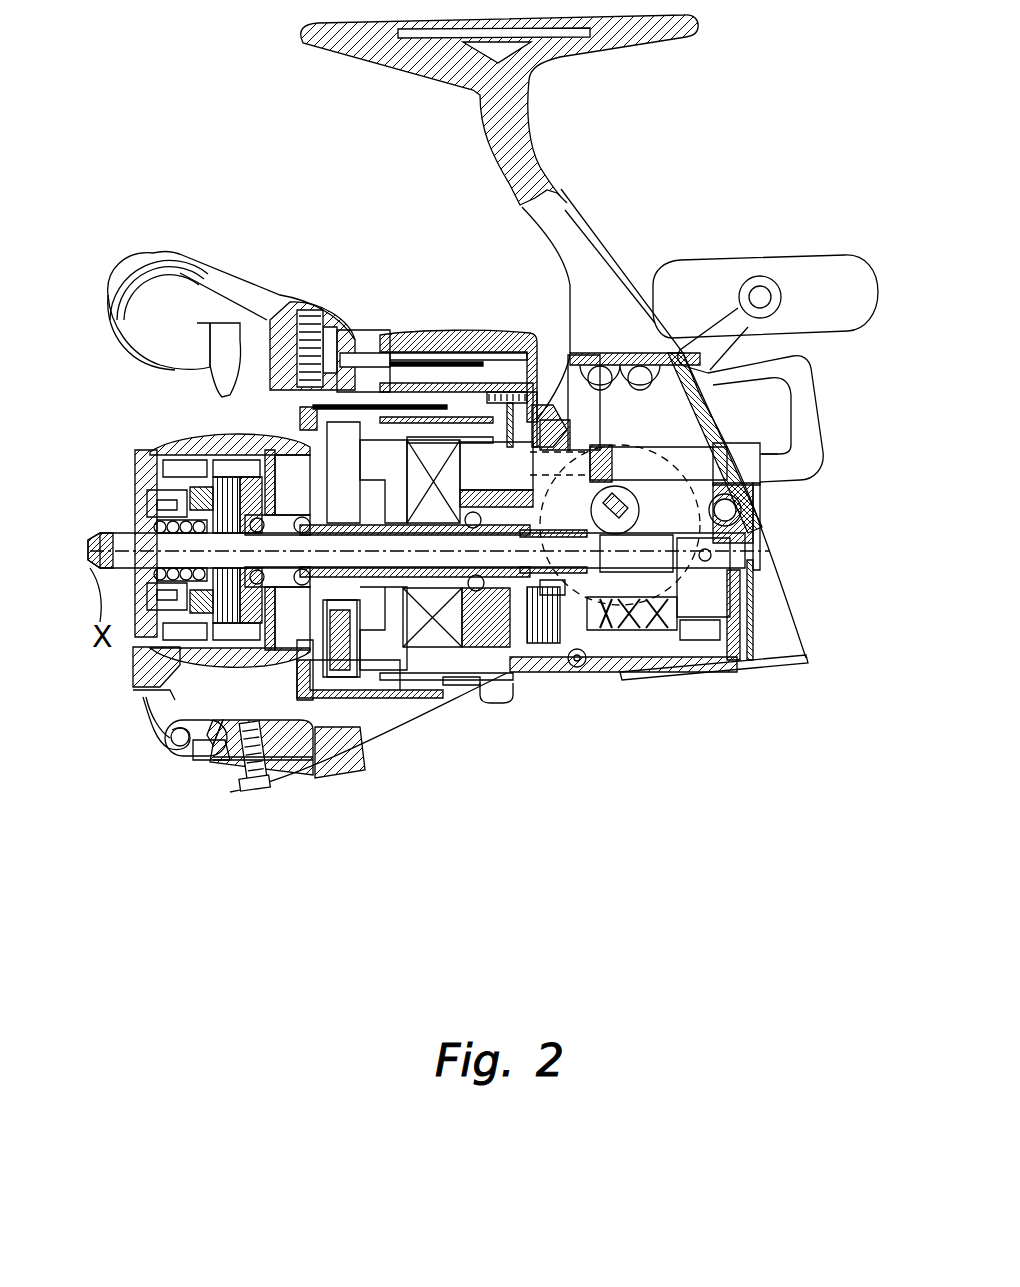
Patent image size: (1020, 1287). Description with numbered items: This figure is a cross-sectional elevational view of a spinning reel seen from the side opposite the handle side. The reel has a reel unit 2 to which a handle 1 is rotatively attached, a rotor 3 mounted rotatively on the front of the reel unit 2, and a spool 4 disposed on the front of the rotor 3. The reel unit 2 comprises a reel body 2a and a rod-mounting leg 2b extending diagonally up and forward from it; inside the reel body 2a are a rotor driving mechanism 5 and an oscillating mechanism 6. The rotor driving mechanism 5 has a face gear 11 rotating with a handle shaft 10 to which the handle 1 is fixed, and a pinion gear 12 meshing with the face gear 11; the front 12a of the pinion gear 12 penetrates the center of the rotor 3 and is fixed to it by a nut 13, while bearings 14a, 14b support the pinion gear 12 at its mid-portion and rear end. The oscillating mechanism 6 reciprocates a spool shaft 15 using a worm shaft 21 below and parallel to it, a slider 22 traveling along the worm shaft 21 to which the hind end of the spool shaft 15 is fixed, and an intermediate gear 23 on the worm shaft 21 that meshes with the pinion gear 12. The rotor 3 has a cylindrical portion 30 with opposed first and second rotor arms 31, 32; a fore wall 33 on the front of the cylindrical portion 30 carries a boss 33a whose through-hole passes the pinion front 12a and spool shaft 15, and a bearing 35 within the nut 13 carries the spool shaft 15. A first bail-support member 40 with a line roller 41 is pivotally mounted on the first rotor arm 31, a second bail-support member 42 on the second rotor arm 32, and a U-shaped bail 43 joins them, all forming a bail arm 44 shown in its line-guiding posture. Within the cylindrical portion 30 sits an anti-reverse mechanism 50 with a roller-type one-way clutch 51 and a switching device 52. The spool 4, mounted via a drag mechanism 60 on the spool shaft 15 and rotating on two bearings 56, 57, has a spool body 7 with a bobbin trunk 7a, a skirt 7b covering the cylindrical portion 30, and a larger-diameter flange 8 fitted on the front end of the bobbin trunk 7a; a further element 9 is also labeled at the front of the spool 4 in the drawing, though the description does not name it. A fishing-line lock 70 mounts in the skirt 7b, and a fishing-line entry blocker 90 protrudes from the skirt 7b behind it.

The handle 1 is at (730, 318).
The reel unit 2 is at (797, 552).
The reel body 2a is at (790, 500).
The rod-mounting leg 2b is at (579, 222).
The rotor 3 is at (408, 712).
The spool 4 is at (267, 677).
The rotor driving mechanism 5 is at (650, 486).
The oscillating mechanism 6 is at (637, 650).
The spool body 7 is at (287, 682).
The bobbin trunk 7a is at (223, 650).
The skirt 7b is at (300, 705).
The larger-diameter flange 8 is at (160, 692).
The bail reversing mechanism 9 is at (140, 675).
The handle shaft 10 is at (590, 350).
The face gear 11 is at (663, 655).
The pinion gear 12 is at (513, 673).
The front of the pinion gear 12a is at (397, 630).
The nut 13 is at (326, 523).
The bearing 14a is at (471, 515).
The bearing 14b is at (590, 680).
The spool shaft 15 is at (705, 650).
The worm shaft 21 is at (660, 700).
The slider 22 is at (760, 650).
The intermediate gear 23 is at (548, 645).
The cylindrical portion 30 is at (426, 702).
The first rotor arm 31 is at (322, 315).
The second rotor arm 32 is at (322, 790).
The fore wall 33 is at (300, 418).
The boss 33a is at (378, 506).
The bearing 35 is at (323, 614).
The first bail-support member 40 is at (243, 290).
The line roller 41 is at (113, 277).
The second bail-support member 42 is at (190, 757).
The bail 43 is at (228, 386).
The bail arm 44 is at (152, 376).
The anti-reverse mechanism 50 is at (448, 437).
The roller-type one-way clutch 51 is at (500, 395).
The switching device 52 is at (625, 432).
The bearing 56 is at (267, 510).
The bearing 57 is at (305, 530).
The drag mechanism 60 is at (160, 740).
The fishing-line lock 70 is at (300, 318).
The fishing-line entry blocker 90 is at (380, 403).